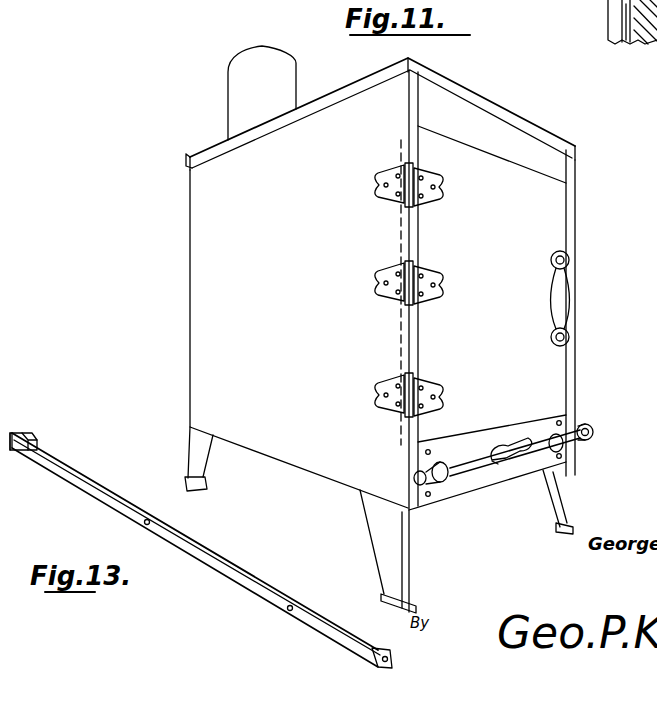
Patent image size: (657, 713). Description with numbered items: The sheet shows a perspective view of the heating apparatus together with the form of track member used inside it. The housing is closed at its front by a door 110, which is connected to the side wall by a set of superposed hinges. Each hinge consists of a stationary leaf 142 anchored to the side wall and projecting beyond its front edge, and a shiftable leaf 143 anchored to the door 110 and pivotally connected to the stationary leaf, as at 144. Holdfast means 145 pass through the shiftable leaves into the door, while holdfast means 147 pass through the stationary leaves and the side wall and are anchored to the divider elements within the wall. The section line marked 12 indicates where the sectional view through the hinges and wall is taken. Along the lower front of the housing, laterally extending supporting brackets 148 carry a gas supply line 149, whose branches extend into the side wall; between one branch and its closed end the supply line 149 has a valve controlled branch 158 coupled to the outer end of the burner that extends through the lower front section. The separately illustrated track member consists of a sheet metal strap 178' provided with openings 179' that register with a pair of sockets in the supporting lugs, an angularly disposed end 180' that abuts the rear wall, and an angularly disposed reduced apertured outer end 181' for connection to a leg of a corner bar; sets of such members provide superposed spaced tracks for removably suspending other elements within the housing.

In FIG. 11, the door 110 is at (535, 217).
In FIG. 11, the section line 12- 12 is at (394, 290).
In FIG. 11, the stationary leaf 142 is at (393, 191).
In FIG. 11, the shiftable leaf 143 is at (425, 196).
In FIG. 11, the pivotal connection 144 is at (408, 201).
In FIG. 11, the holdfast means 145 is at (437, 289).
In FIG. 11, the holdfast means 147 is at (398, 297).
In FIG. 11, the supporting bracket 148 is at (447, 480).
In FIG. 11, the gas supply line 149 is at (475, 466).
In FIG. 11, the valve controlled branch 158 is at (505, 440).
In FIG. 13, the strap 178' is at (229, 527).
In FIG. 13, the openings 179' is at (205, 536).
In FIG. 13, the angularly disposed end 180' is at (38, 417).
In FIG. 13, the reduced apertured outer end 181' is at (410, 659).